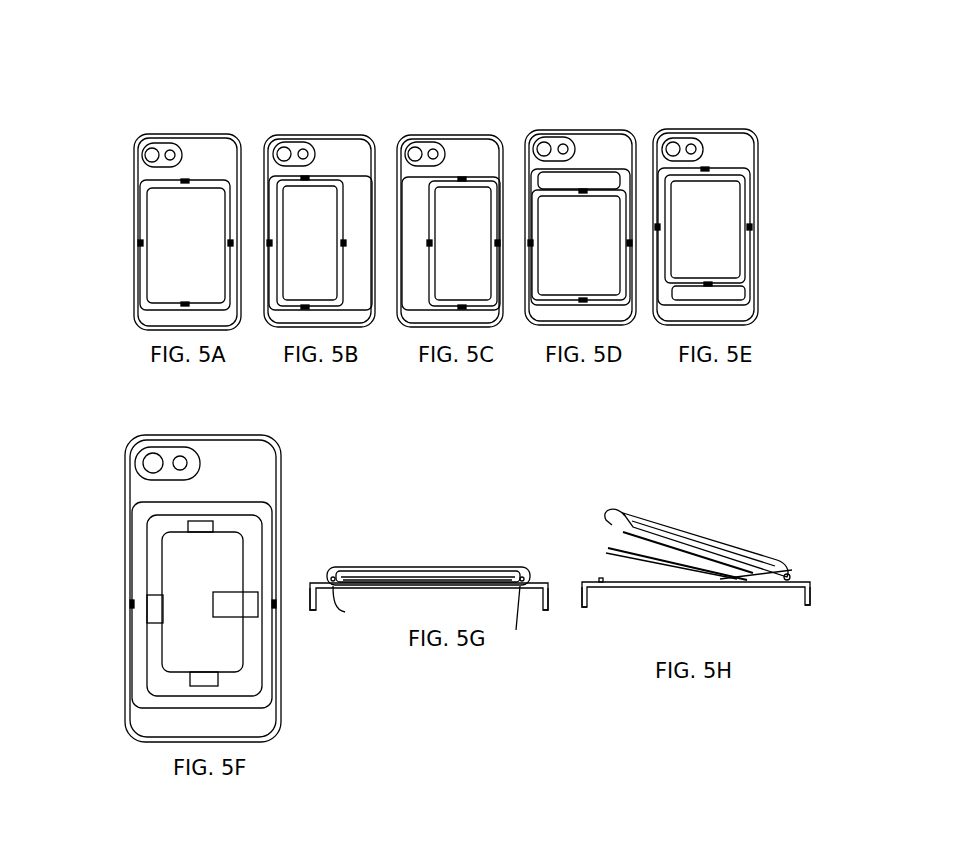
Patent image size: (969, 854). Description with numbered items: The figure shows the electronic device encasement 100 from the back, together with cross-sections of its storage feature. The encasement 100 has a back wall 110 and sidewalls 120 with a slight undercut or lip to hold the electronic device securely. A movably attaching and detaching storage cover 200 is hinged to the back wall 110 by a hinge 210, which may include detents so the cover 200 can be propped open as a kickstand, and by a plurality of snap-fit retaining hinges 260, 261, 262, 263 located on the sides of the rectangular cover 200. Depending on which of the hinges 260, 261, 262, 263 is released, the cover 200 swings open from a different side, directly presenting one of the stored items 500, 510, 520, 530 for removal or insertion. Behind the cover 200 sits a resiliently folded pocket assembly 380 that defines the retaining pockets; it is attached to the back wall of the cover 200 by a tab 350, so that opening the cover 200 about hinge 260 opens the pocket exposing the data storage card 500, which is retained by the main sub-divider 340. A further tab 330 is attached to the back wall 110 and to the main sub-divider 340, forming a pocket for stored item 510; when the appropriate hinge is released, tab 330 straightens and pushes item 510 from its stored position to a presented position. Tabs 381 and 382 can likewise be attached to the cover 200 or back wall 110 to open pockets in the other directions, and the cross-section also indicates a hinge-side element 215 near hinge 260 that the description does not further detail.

In FIG. 5A, the encasement 100 is at (135, 328).
In FIG. 5B, the encasement 100 is at (319, 231).
In FIG. 5C, the encasement 100 is at (450, 231).
In FIG. 5D, the encasement 100 is at (580, 227).
In FIG. 5E, the encasement 100 is at (787, 142).
In FIG. 5F, the encasement 100 is at (283, 480).
In FIG. 5G, the encasement 100 is at (531, 575).
In FIG. 5H, the encasement 100 is at (582, 603).
In FIG. 5A, the back wall 110 is at (150, 322).
In FIG. 5E, the back wall 110 is at (735, 159).
In FIG. 5G, the sidewalls 120 is at (307, 600).
In FIG. 5H, the sidewalls 120 is at (580, 596).
In FIG. 5A, the storage cover 200 is at (175, 228).
In FIG. 5B, the storage cover 200 is at (318, 200).
In FIG. 5C, the storage cover 200 is at (467, 185).
In FIG. 5D, the storage cover 200 is at (602, 197).
In FIG. 5E, the storage cover 200 is at (720, 168).
In FIG. 5G, the storage cover 200 is at (405, 567).
In FIG. 5H, the storage cover 200 is at (705, 538).
In FIG. 5F, the hinge 210 is at (268, 513).
In FIG. 5H, the hinge 215 is at (795, 575).
In FIG. 5A, the hinge 260 is at (140, 245).
In FIG. 5B, the hinge 260 is at (270, 244).
In FIG. 5C, the hinge 260 is at (430, 243).
In FIG. 5D, the hinge 260 is at (531, 243).
In FIG. 5E, the hinge 260 is at (658, 226).
In FIG. 5G, the hinge 260 is at (521, 628).
In FIG. 5H, the hinge 260 is at (795, 578).
In FIG. 5A, the hinge 261 is at (186, 182).
In FIG. 5B, the hinge 261 is at (306, 178).
In FIG. 5C, the hinge 261 is at (460, 177).
In FIG. 5D, the hinge 261 is at (582, 190).
In FIG. 5E, the hinge 261 is at (704, 168).
In FIG. 5A, the hinge 262 is at (230, 243).
In FIG. 5B, the hinge 262 is at (345, 244).
In FIG. 5C, the hinge 262 is at (498, 240).
In FIG. 5D, the hinge 262 is at (631, 243).
In FIG. 5E, the hinge 262 is at (750, 227).
In FIG. 5G, the hinge 262 is at (363, 607).
In FIG. 5A, the hinge 263 is at (190, 305).
In FIG. 5B, the hinge 263 is at (307, 308).
In FIG. 5C, the hinge 263 is at (465, 307).
In FIG. 5D, the hinge 263 is at (583, 300).
In FIG. 5E, the hinge 263 is at (708, 287).
In FIG. 5F, the tab 330 is at (157, 612).
In FIG. 5H, the tab 330 is at (742, 580).
In FIG. 5F, the main sub-divider 340 is at (220, 648).
In FIG. 5H, the main sub-divider 340 is at (633, 535).
In FIG. 5F, the tab 350 is at (236, 610).
In FIG. 5H, the tab 350 is at (637, 530).
In FIG. 5F, the pocket assembly 380 is at (150, 530).
In FIG. 5G, the pocket assembly 380 is at (452, 576).
In FIG. 5F, the tab 381 is at (207, 524).
In FIG. 5F, the tab 382 is at (205, 682).
In FIG. 5B, the stored item 500 is at (360, 200).
In FIG. 5H, the stored item 500 is at (752, 560).
In FIG. 5C, the stored item 510 is at (418, 195).
In FIG. 5H, the stored item 510 is at (650, 565).
In FIG. 5D, the stored item 520 is at (608, 180).
In FIG. 5E, the stored item 530 is at (725, 297).